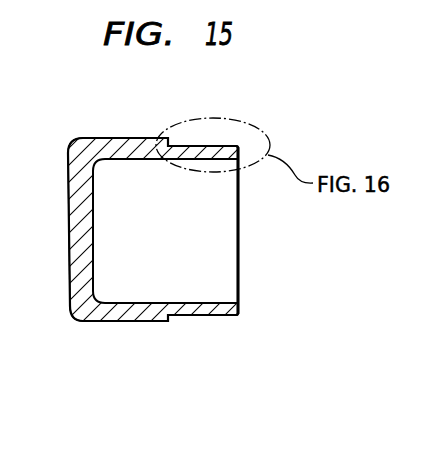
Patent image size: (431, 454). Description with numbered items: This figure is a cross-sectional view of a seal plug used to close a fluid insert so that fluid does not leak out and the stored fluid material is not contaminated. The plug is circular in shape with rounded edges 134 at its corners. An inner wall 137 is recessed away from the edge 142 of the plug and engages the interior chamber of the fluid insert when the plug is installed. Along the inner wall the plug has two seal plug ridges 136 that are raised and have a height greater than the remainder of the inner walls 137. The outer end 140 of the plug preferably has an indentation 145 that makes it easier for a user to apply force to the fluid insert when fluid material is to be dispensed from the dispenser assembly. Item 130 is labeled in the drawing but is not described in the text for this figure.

The cap 130 is at (109, 134).
The rounded edges 134 is at (77, 146).
The seal plug ridges 136 is at (186, 318).
The inner wall 137 is at (231, 148).
The outer end 140 is at (70, 287).
The edge 142 is at (170, 142).
The indentation 145 is at (70, 237).